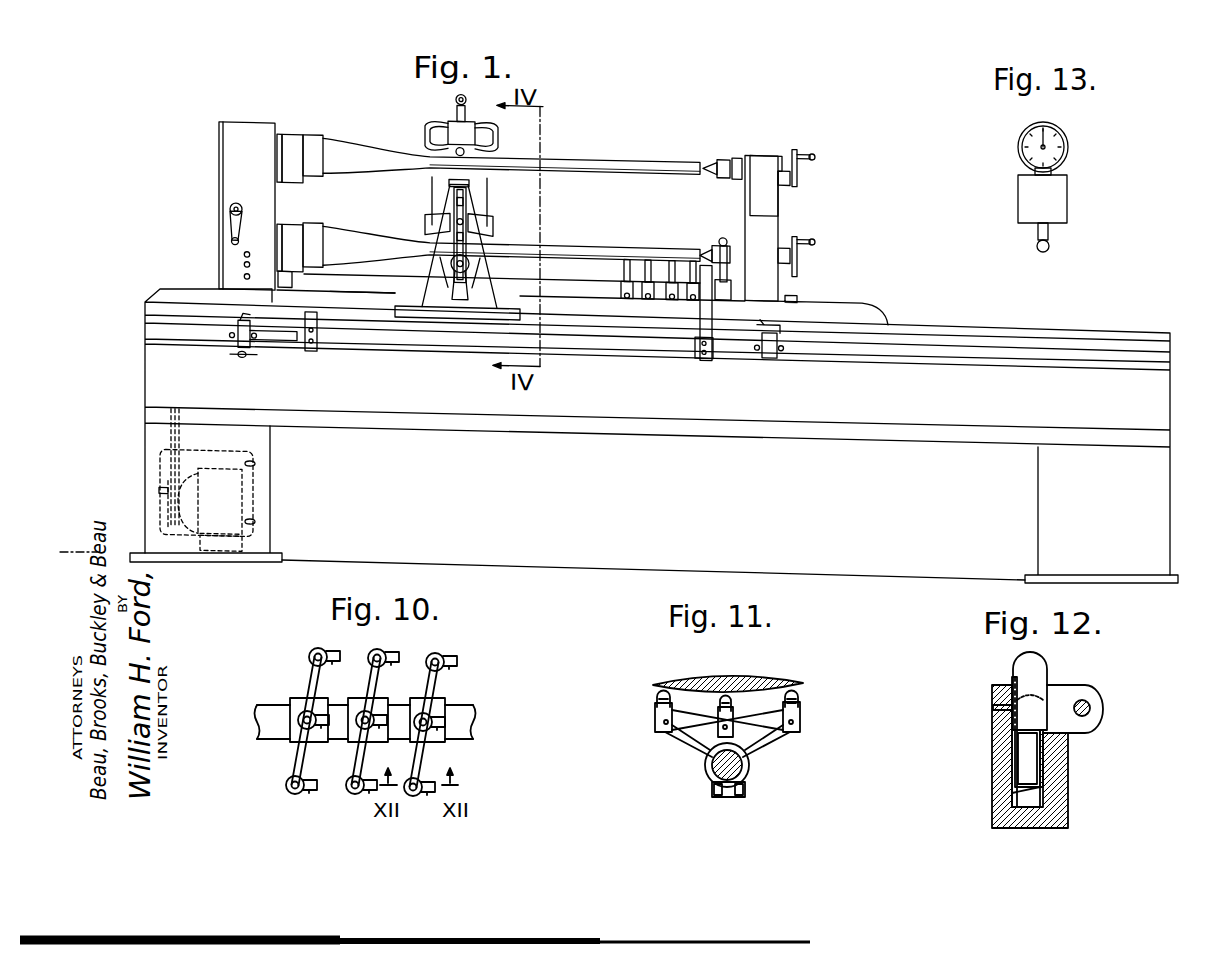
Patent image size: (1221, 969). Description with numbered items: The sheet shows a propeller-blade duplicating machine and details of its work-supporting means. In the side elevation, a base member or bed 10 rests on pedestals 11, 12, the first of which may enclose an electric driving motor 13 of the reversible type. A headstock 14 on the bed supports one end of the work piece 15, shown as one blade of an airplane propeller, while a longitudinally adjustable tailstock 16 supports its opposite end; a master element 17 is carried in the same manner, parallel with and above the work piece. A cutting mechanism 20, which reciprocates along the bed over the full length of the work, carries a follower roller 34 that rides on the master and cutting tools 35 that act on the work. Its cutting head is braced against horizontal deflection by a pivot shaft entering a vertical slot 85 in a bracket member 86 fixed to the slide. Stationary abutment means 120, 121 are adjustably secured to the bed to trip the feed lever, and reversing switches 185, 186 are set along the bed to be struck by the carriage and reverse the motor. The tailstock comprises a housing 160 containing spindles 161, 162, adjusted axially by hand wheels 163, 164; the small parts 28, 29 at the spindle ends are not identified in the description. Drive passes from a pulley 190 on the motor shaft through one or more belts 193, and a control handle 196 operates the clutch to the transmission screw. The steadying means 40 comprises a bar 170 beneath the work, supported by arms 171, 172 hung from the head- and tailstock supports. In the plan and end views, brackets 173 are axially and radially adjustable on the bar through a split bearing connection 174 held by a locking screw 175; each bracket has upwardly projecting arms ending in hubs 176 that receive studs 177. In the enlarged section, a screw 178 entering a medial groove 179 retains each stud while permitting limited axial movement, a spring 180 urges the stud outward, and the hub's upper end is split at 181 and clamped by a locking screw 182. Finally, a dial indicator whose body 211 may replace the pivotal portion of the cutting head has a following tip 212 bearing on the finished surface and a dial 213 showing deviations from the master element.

In FIG. 1, the base member 10 is at (573, 405).
In FIG. 1, the pedestal 11 is at (273, 453).
In FIG. 1, the pedestal 12 is at (1048, 472).
In FIG. 1, the electric driving motor 13 is at (262, 482).
In FIG. 1, the headstock 14 is at (235, 148).
In FIG. 1, the work piece 15 is at (607, 235).
In FIG. 1, the tailstock 16 is at (780, 190).
In FIG. 1, the master element 17 is at (607, 148).
In FIG. 1, the cutting mechanism 20 is at (432, 183).
In FIG. 1, the center 28 is at (722, 146).
In FIG. 1, the center point 29 is at (703, 151).
In FIG. 1, the follower roller 34 is at (427, 133).
In FIG. 1, the cutting tool 35 is at (455, 234).
In FIG. 1, the supporting means 40 is at (563, 281).
In FIG. 10, the supporting means 40 is at (273, 741).
In FIG. 1, the vertical slot 85 is at (463, 187).
In FIG. 1, the bracket member 86 is at (476, 247).
In FIG. 1, the abutment means 120 is at (318, 333).
In FIG. 1, the abutment means 121 is at (703, 300).
In FIG. 1, the housing 160 is at (768, 143).
In FIG. 1, the spindle 161 is at (740, 144).
In FIG. 1, the spindle 162 is at (722, 225).
In FIG. 1, the hand wheel 163 is at (798, 138).
In FIG. 1, the hand wheel 164 is at (799, 243).
In FIG. 1, the shaft or bar 170 is at (367, 279).
In FIG. 10, the shaft or bar 170 is at (270, 703).
In FIG. 1, the arm 171 is at (283, 232).
In FIG. 1, the arm 172 is at (776, 268).
In FIG. 10, the bracket 173 is at (441, 690).
In FIG. 11, the bracket 173 is at (690, 736).
In FIG. 12, the bracket 173 is at (1000, 798).
In FIG. 10, the bearing connection 174 is at (437, 748).
In FIG. 11, the bearing connection 174 is at (705, 768).
In FIG. 11, the locking screw 175 is at (746, 790).
In FIG. 10, the hub or boss member 176 is at (447, 651).
In FIG. 11, the hub or boss member 176 is at (717, 719).
In FIG. 12, the hub or boss member 176 is at (993, 723).
In FIG. 10, the stud 177 is at (457, 660).
In FIG. 11, the stud 177 is at (667, 695).
In FIG. 12, the stud 177 is at (1013, 662).
In FIG. 12, the screw 178 is at (993, 707).
In FIG. 12, the medial groove 179 is at (993, 738).
In FIG. 12, the spring 180 is at (1012, 778).
In FIG. 12, the split 181 is at (1070, 695).
In FIG. 10, the locking screw 182 is at (447, 740).
In FIG. 11, the locking screw 182 is at (743, 724).
In FIG. 12, the locking screw 182 is at (1090, 706).
In FIG. 1, the reversing switch 185 is at (238, 334).
In FIG. 1, the reversing switch 186 is at (770, 343).
In FIG. 1, the pulley 190 is at (165, 515).
In FIG. 1, the belt 193 is at (170, 430).
In FIG. 1, the control handle 196 is at (239, 354).
In FIG. 13, the body 211 is at (1053, 196).
In FIG. 13, the following tip 212 is at (1050, 247).
In FIG. 13, the dial 213 is at (1069, 147).